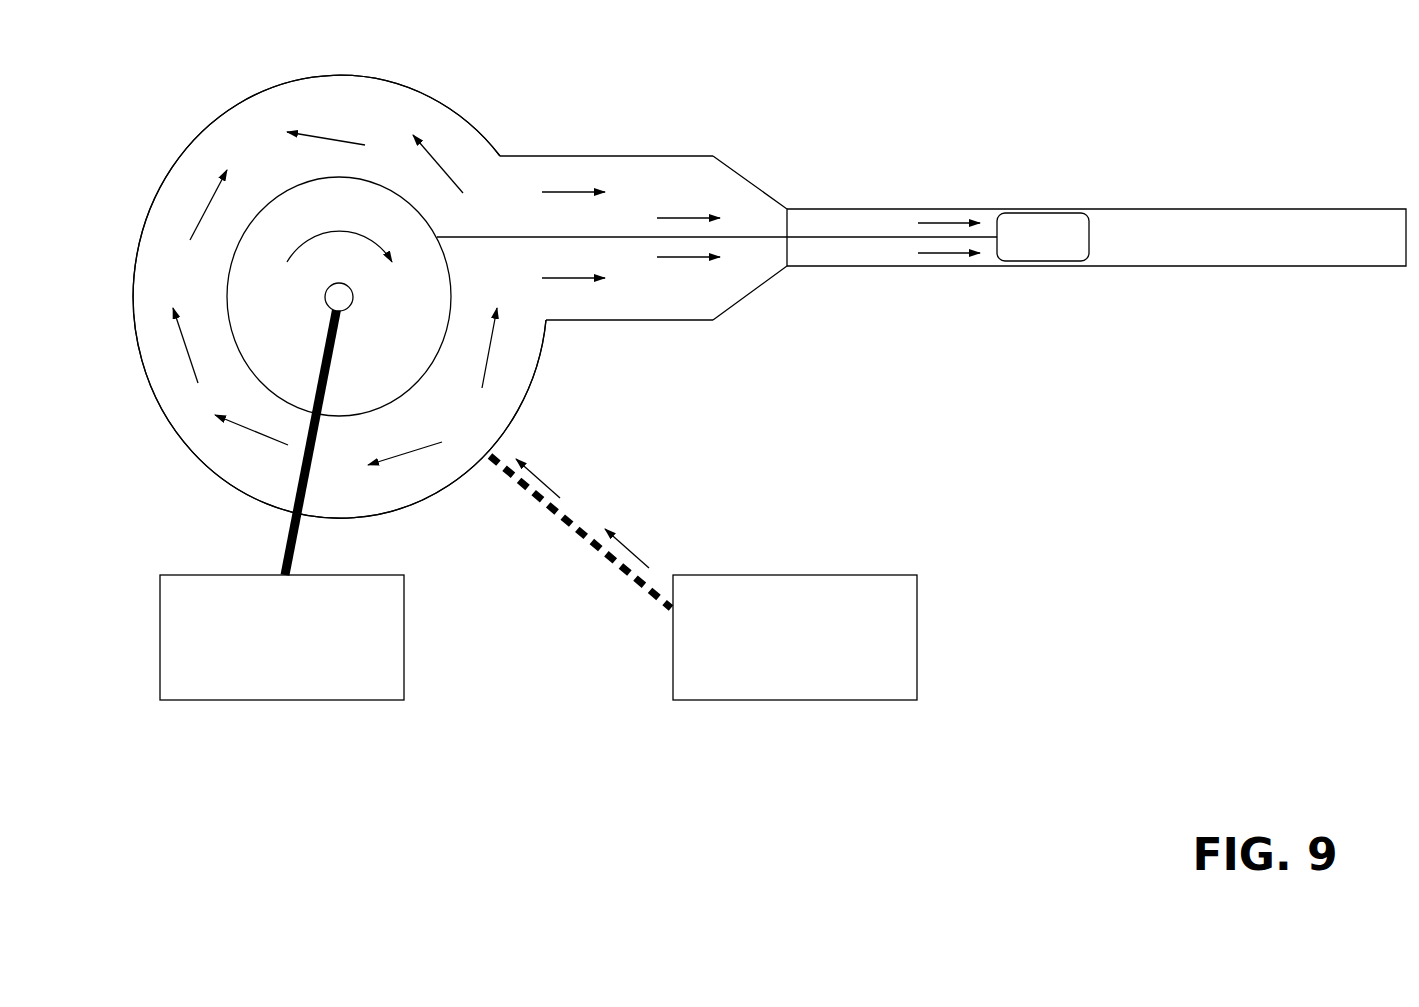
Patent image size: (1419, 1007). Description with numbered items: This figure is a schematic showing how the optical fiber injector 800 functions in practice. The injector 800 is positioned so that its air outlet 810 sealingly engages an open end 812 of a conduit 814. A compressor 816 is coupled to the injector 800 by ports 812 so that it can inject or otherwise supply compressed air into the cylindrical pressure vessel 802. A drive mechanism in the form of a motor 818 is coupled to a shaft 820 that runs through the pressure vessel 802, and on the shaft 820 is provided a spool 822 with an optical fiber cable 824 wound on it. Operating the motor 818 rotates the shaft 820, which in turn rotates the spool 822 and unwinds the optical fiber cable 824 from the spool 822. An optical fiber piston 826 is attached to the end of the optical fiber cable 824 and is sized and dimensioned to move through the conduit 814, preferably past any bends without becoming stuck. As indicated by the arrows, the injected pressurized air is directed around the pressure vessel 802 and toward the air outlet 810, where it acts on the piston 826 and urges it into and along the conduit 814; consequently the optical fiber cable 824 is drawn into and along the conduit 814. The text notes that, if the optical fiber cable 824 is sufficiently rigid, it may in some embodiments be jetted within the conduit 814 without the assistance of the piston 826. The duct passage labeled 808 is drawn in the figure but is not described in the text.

The injector 800 is at (390, 80).
The pressure vessel 802 is at (175, 163).
The outlet duct 808 is at (652, 156).
The air outlet 810 is at (790, 210).
The open end of conduit 812 is at (788, 250).
The conduit 814 is at (1178, 209).
The compressor 816 is at (804, 575).
The motor 818 is at (190, 575).
The shaft 820 is at (295, 223).
The spool 822 is at (295, 185).
The optical fiber cable 824 is at (530, 237).
The optical fiber piston 826 is at (1037, 220).